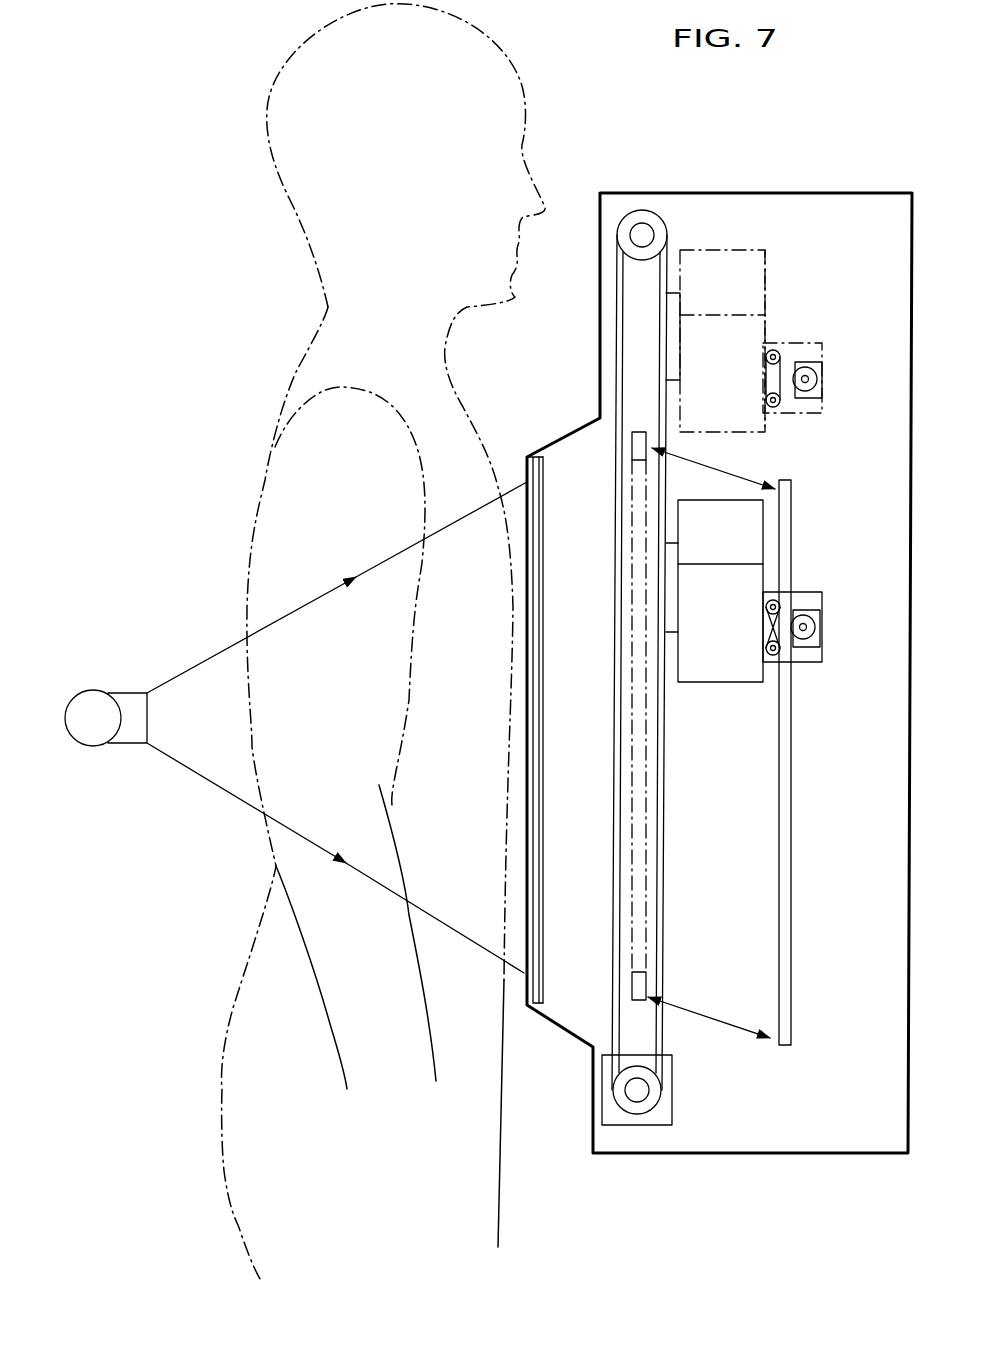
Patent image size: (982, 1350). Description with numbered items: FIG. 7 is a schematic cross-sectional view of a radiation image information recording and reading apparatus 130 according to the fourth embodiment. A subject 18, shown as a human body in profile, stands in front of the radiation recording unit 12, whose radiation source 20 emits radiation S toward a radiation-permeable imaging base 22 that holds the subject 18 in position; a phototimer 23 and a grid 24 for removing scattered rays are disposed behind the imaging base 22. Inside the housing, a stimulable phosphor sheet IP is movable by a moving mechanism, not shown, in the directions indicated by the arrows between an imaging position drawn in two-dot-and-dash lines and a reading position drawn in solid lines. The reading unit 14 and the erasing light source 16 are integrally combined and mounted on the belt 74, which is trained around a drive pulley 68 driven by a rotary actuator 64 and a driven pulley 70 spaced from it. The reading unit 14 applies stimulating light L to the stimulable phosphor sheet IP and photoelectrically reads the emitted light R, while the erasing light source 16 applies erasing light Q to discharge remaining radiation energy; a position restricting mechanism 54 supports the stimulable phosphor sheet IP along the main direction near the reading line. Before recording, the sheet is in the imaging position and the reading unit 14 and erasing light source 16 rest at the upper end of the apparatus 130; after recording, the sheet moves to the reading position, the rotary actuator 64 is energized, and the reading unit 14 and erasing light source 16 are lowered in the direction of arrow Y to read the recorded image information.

The radiation image information recording and reading apparatus 130 is at (705, 126).
The radiation recording unit 12 is at (555, 431).
The reading unit 14 is at (752, 440).
The erasing light source 16 is at (772, 296).
The subject 18 is at (278, 410).
The radiation source 20 is at (93, 706).
The imaging base 22 is at (528, 779).
The phototimer 23 is at (526, 690).
The grid 24 is at (540, 846).
The position restricting mechanism 54 is at (812, 341).
The rotary actuator 64 is at (658, 1115).
The drive pulley 68 is at (612, 1097).
The driven pulley 70 is at (654, 235).
The belt 74 is at (668, 268).
The stimulable phosphor sheet IP is at (665, 975).
The radiation S is at (202, 782).
The erasing light Q is at (777, 531).
The light emitted from the stimulable phosphor sheet R is at (765, 607).
The stimulating light L is at (765, 648).
The auxiliary direction arrow Y is at (690, 712).